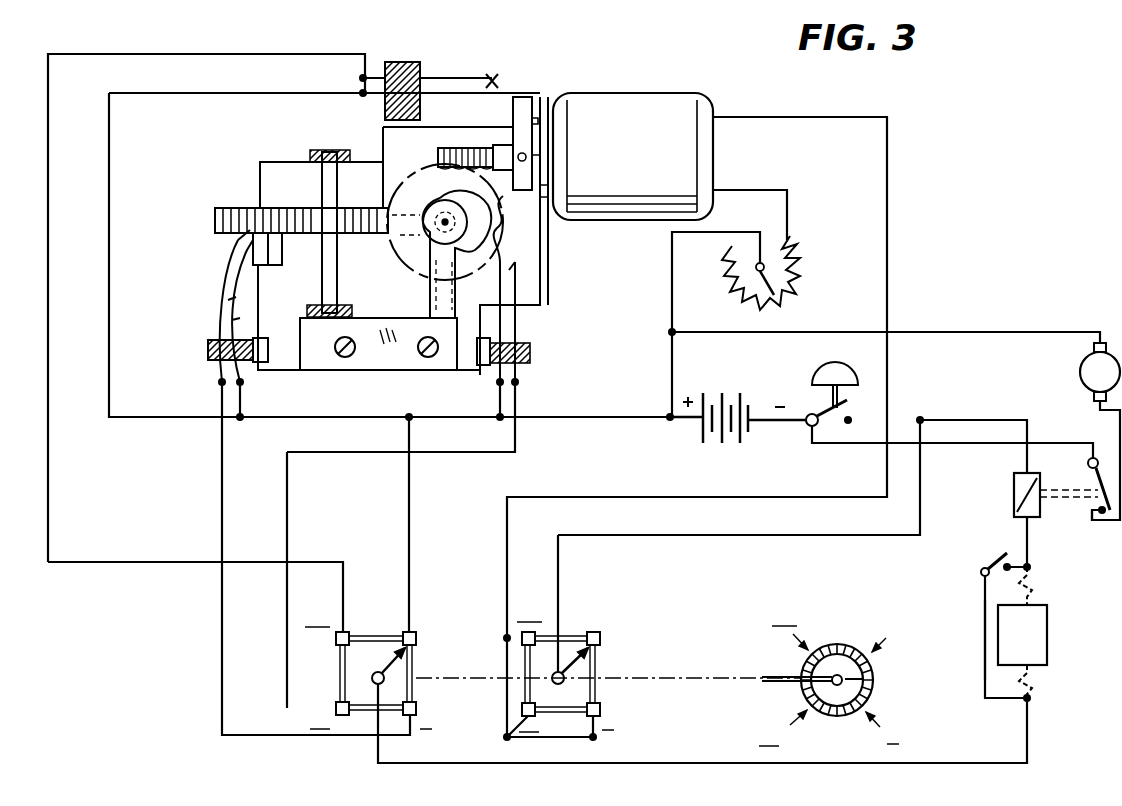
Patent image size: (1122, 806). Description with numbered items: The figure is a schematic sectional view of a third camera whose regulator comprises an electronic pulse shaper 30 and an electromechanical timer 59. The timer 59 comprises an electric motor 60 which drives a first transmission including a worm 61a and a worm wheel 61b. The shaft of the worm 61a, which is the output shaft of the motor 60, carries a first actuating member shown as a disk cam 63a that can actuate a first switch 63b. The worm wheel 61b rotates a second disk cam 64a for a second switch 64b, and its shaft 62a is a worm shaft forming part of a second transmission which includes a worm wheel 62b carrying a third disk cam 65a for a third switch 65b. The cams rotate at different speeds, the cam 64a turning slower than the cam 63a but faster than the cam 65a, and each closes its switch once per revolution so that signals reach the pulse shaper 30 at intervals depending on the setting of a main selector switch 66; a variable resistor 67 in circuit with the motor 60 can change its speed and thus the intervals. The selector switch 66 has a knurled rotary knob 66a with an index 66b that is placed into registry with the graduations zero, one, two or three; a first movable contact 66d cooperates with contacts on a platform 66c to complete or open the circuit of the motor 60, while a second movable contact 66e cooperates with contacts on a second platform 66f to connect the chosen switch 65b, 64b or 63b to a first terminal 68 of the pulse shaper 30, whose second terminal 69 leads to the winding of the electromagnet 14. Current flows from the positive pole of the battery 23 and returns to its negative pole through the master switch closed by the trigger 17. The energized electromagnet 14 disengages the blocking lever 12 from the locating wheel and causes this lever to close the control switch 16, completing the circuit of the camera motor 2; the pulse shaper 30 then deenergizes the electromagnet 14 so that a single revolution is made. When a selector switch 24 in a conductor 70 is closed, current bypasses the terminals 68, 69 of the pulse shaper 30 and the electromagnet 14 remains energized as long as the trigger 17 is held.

The electromechanical timer 59 is at (215, 208).
The electric motor 60 is at (665, 118).
The worm 61a is at (438, 157).
The worm wheel 61b is at (400, 212).
The shaft 62a is at (440, 227).
The worm wheel 62b is at (283, 220).
The disk cam 63a is at (513, 112).
The first switch 63b is at (494, 82).
The disk cam 64a is at (480, 243).
The second switch 64b is at (512, 274).
The disk cam 65a is at (284, 263).
The third switch 65b is at (228, 295).
The main selector switch 66 is at (460, 637).
The rotary knob 66a is at (873, 680).
The index 66b is at (857, 652).
The platform 66c is at (562, 716).
The first movable contact 66d is at (580, 660).
The second movable contact 66e is at (388, 648).
The second platform 66f is at (360, 712).
The variable resistor 67 is at (795, 290).
The trigger 17 is at (822, 385).
The camera motor 2 is at (1078, 370).
The battery 23 is at (738, 440).
The blocking lever 12 is at (1063, 488).
The electromagnet 14 is at (1014, 492).
The control switch 16 is at (1092, 518).
The selector switch 24 is at (990, 560).
The second terminal 69 is at (1040, 588).
The conductor 70 is at (985, 632).
The electronic pulse shaper 30 is at (1047, 638).
The first terminal 68 is at (1038, 690).